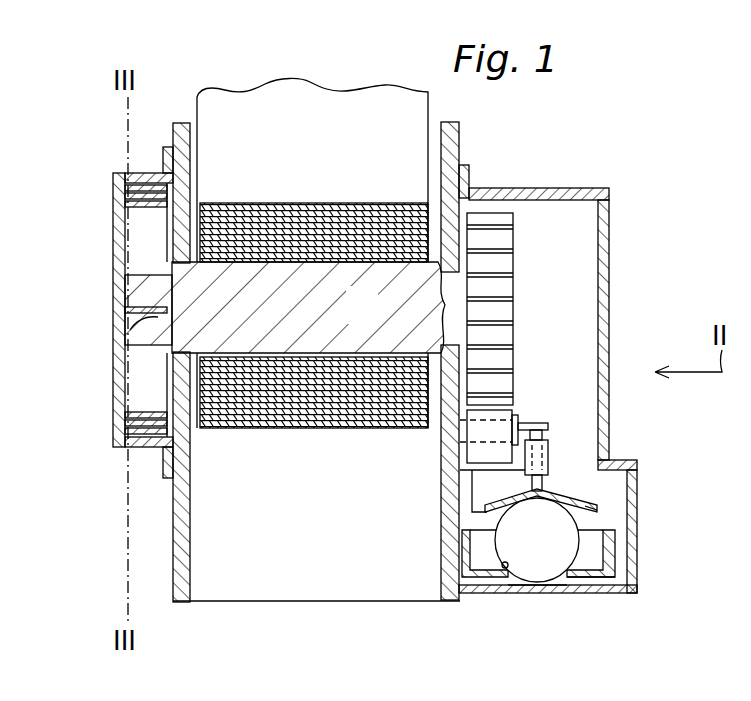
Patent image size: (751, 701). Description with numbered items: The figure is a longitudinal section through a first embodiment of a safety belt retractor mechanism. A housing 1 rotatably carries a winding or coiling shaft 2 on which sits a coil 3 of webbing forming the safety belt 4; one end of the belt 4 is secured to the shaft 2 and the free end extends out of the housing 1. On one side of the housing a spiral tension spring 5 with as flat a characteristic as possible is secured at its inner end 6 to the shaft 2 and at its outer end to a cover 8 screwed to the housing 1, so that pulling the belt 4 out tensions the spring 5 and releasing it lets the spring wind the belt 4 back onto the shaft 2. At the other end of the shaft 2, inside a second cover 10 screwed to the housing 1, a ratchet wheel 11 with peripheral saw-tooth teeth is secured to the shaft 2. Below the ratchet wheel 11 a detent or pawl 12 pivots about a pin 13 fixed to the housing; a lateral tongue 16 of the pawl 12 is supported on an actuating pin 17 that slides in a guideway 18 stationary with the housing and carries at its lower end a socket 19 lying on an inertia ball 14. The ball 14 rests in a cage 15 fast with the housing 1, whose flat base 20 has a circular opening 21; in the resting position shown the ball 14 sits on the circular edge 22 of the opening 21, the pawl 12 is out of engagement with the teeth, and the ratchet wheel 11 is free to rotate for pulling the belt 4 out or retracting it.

The housing 1 is at (280, 592).
The winding or coiling shaft 2 is at (372, 319).
The coil of webbing 3 is at (260, 425).
The safety belt 4 is at (320, 92).
The spiral tension spring 5 is at (138, 220).
The inner end of spring 6 is at (131, 327).
The cover 8 is at (122, 265).
The cover 10 is at (533, 190).
The ratchet wheel 11 is at (503, 276).
The detent or pawl 12 is at (498, 428).
The pin 13 is at (467, 428).
The ball 14 is at (553, 555).
The cage 15 is at (480, 540).
The lateral tongue 16 is at (537, 426).
The actuating pin 17 is at (538, 485).
The guideway 18 is at (545, 458).
The socket 19 is at (590, 503).
The flat base 20 is at (582, 582).
The circular opening 21 is at (560, 583).
The circular edge 22 is at (502, 567).